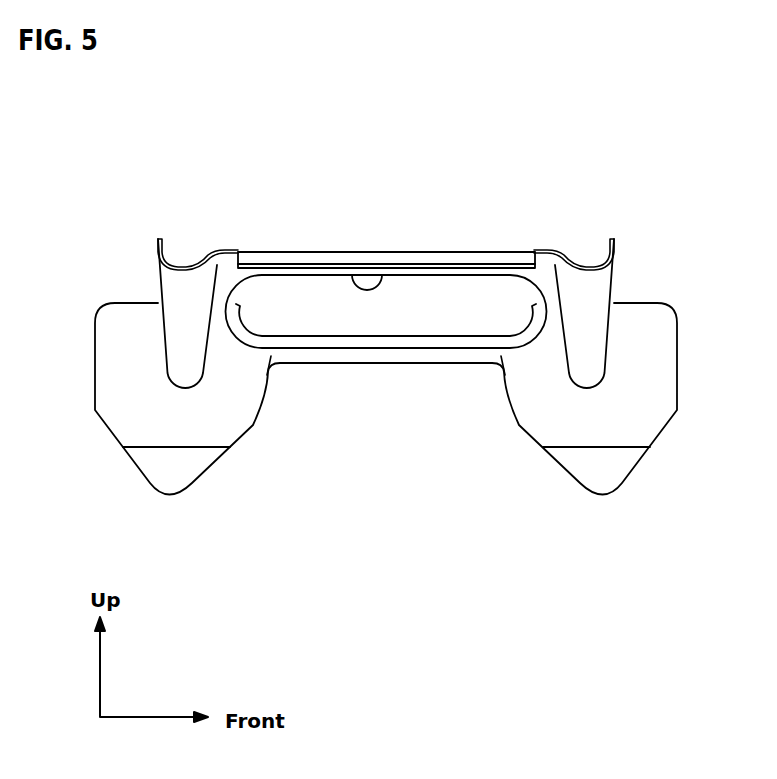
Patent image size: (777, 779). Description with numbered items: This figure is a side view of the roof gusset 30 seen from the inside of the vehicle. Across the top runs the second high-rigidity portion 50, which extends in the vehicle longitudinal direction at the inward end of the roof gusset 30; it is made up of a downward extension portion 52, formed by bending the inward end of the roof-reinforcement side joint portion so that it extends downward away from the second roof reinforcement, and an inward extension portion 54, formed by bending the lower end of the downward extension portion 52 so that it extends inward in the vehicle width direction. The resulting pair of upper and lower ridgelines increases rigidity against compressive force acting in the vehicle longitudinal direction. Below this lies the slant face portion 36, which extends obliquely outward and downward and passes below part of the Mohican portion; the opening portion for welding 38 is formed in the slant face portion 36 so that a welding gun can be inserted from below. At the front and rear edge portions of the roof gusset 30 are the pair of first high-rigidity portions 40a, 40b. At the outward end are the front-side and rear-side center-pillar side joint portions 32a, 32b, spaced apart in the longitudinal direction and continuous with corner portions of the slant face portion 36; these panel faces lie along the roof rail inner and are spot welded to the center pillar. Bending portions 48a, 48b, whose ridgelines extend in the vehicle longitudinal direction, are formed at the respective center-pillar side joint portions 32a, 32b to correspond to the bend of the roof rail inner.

The roof gusset 30 is at (605, 142).
The front-side center-pillar side joint portion 32a is at (665, 367).
The rear-side center-pillar side joint portion 32b is at (115, 377).
The slant face portion 36 is at (382, 358).
The opening portion for welding 38 is at (355, 277).
The first high-rigidity portion 40a is at (600, 288).
The first high-rigidity portion 40b is at (177, 290).
The bending portion 48a is at (622, 448).
The bending portion 48b is at (157, 448).
The second high-rigidity portion 50 is at (462, 251).
The downward extension portion 52 is at (410, 257).
The inward extension portion 54 is at (500, 263).